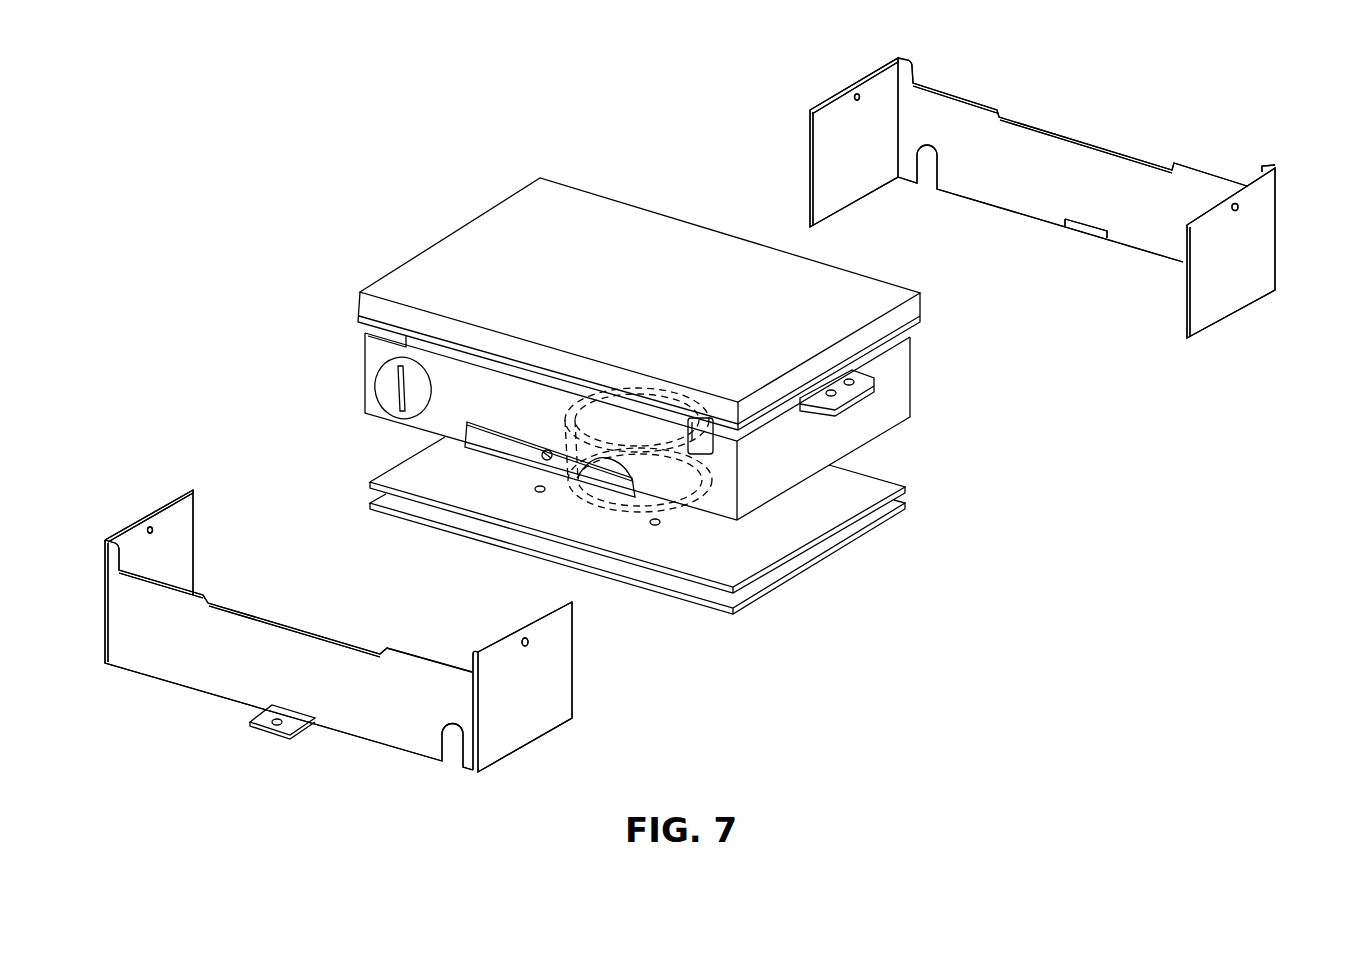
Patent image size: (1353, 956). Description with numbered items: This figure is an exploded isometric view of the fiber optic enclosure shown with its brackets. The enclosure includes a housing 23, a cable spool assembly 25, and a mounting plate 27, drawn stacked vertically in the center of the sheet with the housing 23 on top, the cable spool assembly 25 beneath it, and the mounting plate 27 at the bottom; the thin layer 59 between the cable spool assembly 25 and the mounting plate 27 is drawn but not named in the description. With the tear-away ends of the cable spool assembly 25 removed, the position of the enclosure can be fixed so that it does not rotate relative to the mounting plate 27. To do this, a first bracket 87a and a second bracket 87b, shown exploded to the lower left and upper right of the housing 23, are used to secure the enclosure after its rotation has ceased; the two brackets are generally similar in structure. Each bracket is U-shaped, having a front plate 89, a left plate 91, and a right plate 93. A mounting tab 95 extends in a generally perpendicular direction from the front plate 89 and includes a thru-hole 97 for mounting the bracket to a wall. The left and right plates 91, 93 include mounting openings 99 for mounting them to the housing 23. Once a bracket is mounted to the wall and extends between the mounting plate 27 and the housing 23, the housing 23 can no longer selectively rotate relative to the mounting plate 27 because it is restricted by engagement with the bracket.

The housing 23 is at (922, 393).
The cable spool assembly 25 is at (875, 453).
The gasket 59 is at (873, 492).
The mounting plate 27 is at (845, 548).
The first bracket 87a is at (338, 640).
The second bracket 87b is at (1015, 178).
The front plate 89 is at (170, 652).
The left plate 91 is at (188, 528).
The right plate 93 is at (551, 690).
The mounting tab 95 is at (296, 718).
The thru-hole 97 is at (265, 719).
The mounting openings 99 is at (152, 527).